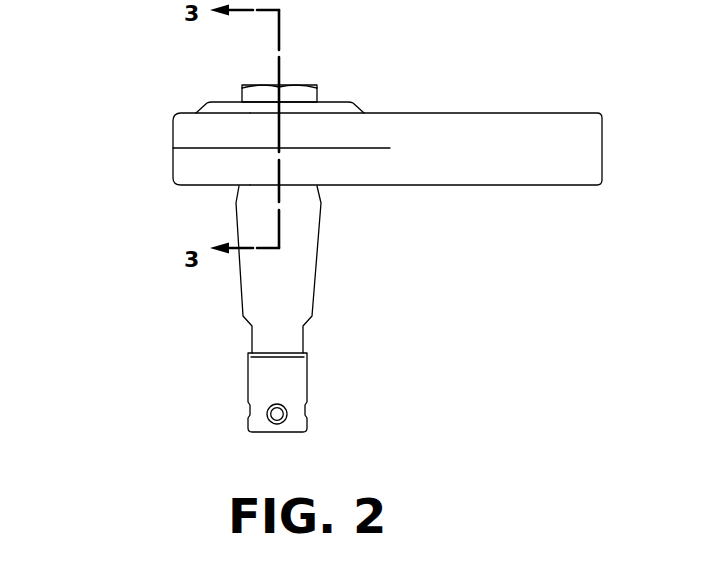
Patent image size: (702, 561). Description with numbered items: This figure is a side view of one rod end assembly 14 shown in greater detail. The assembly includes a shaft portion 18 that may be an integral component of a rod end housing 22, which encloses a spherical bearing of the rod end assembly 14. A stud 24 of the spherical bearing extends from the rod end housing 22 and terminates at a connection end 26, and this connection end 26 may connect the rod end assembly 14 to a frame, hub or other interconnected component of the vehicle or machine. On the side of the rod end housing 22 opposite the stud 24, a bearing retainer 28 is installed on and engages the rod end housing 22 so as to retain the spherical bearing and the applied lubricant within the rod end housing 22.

The rod end assembly 14 is at (320, 234).
The shaft portion 18 is at (526, 127).
The rod end housing 22 is at (183, 127).
The stud 24 is at (260, 277).
The connection end 26 is at (287, 380).
The bearing retainer 28 is at (310, 93).